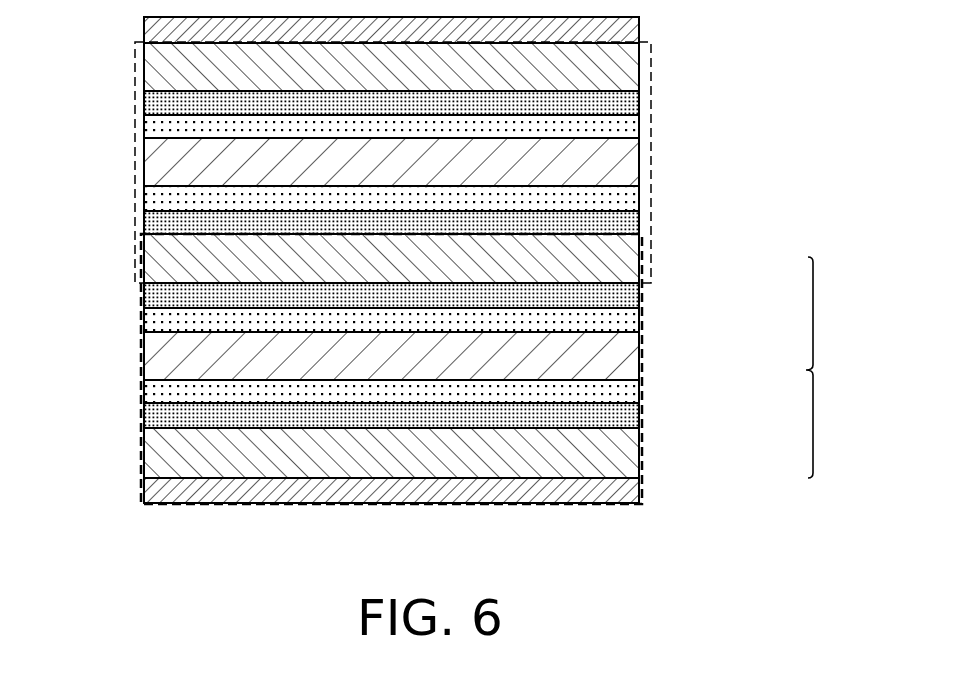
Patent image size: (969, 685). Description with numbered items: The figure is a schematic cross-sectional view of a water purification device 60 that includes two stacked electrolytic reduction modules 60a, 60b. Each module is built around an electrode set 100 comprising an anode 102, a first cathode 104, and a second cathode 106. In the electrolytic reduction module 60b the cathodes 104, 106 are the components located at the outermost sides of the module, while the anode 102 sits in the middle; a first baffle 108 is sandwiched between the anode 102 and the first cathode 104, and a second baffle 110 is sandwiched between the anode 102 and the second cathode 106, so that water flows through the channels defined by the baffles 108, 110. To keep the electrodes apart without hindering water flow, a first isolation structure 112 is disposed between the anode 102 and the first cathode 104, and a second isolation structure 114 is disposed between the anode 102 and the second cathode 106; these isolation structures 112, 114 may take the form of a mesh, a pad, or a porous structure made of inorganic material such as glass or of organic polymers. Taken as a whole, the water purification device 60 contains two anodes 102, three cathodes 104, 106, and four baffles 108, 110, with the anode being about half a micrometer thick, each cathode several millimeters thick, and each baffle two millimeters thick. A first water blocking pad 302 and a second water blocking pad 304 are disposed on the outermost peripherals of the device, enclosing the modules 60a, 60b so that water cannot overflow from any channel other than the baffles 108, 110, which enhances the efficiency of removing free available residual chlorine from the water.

The water purification device 60 is at (850, 581).
The electrolytic reduction module 60a is at (135, 141).
The electrolytic reduction module 60b is at (141, 346).
The electrode set 100 is at (836, 367).
The anode 102 is at (628, 160).
The first cathode 104 is at (628, 264).
The second cathode 106 is at (628, 73).
The first baffle 108 is at (632, 222).
The second baffle 110 is at (632, 103).
The first isolation structure 112 is at (632, 199).
The second isolation structure 114 is at (632, 130).
The first water blocking pad 302 is at (640, 32).
The second water blocking pad 304 is at (640, 490).